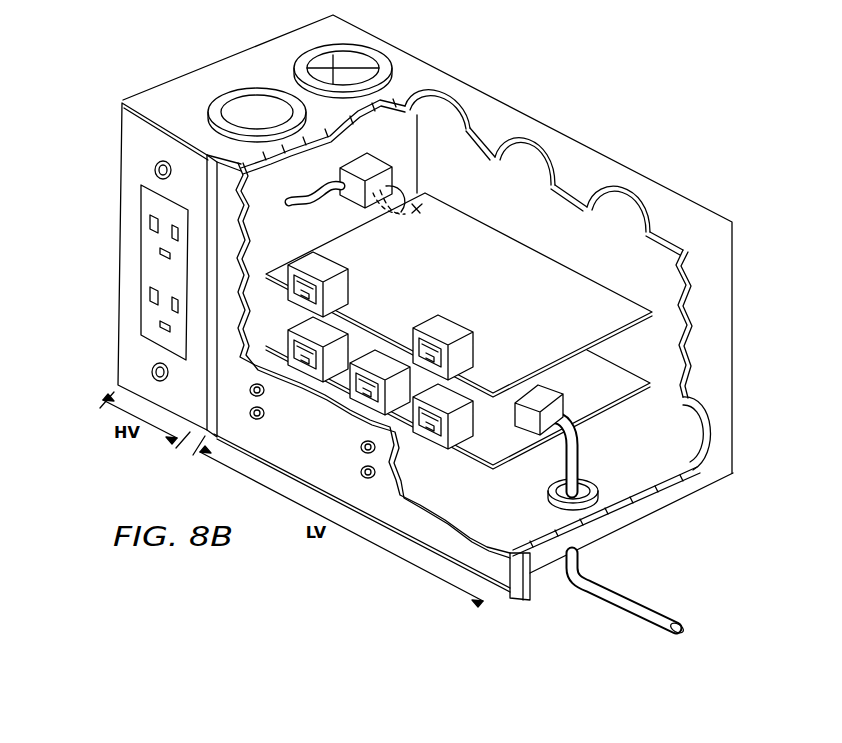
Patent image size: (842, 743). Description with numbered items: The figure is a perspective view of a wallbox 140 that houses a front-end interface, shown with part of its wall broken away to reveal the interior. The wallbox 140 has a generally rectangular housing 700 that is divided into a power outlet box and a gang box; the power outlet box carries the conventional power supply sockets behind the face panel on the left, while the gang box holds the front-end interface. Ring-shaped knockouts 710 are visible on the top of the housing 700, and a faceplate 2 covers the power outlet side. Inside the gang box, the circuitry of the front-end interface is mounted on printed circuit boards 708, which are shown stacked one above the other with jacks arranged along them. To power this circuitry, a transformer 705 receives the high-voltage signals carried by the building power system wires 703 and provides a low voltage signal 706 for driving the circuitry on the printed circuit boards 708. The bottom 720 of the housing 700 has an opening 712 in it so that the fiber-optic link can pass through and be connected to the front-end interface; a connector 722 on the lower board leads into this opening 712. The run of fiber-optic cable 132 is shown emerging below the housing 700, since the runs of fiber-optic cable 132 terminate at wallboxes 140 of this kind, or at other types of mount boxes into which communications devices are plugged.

The housing 700 is at (250, 62).
The wallbox 140 is at (608, 100).
The conduit knockout rings 710 is at (223, 100).
The faceplate / outlet receptacle 2 is at (114, 343).
The printed circuit boards 708 is at (597, 291).
The transformer 705 is at (377, 160).
The building power system wires 703 is at (333, 187).
The low voltage signal 706 is at (427, 198).
The bottom 720 is at (497, 521).
The opening 712 is at (590, 478).
The cable connector 722 is at (562, 394).
The fiber-optic cable 132 is at (650, 604).